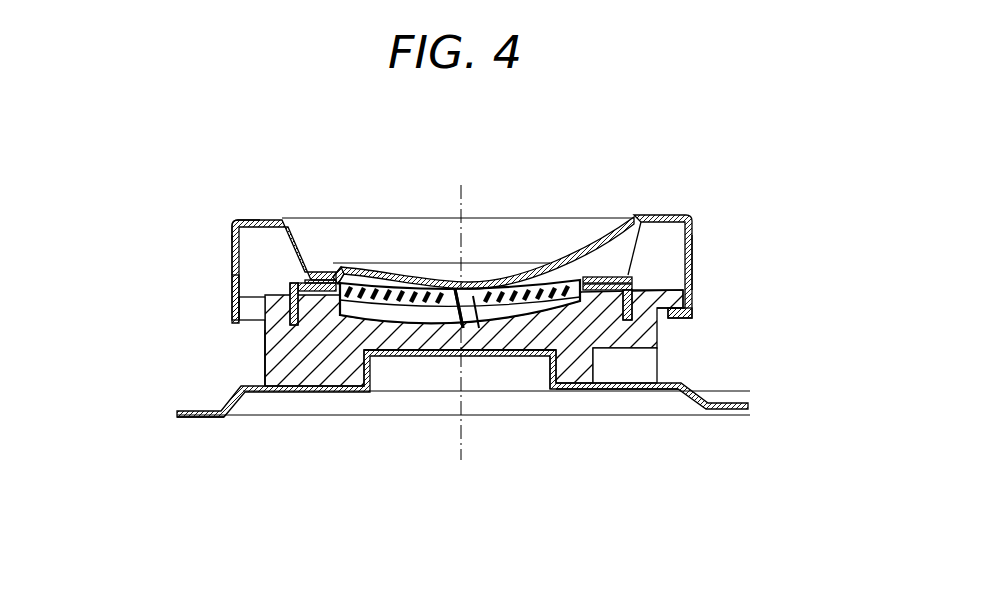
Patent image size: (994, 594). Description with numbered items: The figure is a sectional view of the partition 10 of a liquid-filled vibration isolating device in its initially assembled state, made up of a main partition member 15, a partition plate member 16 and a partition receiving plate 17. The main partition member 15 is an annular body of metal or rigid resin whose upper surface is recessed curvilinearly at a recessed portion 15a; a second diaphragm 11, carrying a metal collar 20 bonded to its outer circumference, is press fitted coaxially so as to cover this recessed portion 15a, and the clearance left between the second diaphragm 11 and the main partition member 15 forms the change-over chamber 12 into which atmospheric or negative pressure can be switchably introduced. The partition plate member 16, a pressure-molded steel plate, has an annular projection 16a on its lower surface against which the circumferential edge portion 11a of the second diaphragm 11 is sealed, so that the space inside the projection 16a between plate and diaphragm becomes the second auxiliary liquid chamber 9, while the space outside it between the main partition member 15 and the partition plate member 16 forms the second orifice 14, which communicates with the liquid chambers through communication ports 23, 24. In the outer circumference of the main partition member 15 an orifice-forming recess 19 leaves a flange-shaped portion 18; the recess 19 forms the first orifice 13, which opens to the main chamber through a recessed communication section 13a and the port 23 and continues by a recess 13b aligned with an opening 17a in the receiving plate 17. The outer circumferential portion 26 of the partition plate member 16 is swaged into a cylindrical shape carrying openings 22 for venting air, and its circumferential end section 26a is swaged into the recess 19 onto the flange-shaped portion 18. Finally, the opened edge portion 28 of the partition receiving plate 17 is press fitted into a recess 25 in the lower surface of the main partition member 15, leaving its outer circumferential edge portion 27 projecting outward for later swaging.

The partition 10 is at (817, 130).
The second auxiliary liquid chamber 9 is at (404, 287).
The second diaphragm 11 is at (530, 275).
The circumferential edge portion of the second diaphragm 11a is at (332, 275).
The change-over chamber 12 is at (497, 330).
The first orifice 13 is at (267, 347).
The recessed communication section 13a is at (253, 307).
The recess 13b is at (622, 370).
The second orifice 14 is at (223, 220).
The main partition member 15 is at (330, 356).
The recessed portion 15a is at (497, 330).
The partition plate member 16 is at (661, 210).
The annular projection 16a is at (322, 278).
The partition receiving plate 17 is at (724, 422).
The opening 17a is at (622, 392).
The flange-shaped portion 18 is at (668, 294).
The orifice-forming recess 19 is at (267, 347).
The metal collar 20 is at (259, 267).
The openings 22 is at (233, 255).
The communication port 23 is at (300, 275).
The communication port 24 is at (587, 282).
The recess 25 is at (410, 356).
The outer circumferential portion 26 is at (233, 282).
The circumferential end section 26a is at (678, 320).
The outer circumferential edge portion 27 is at (200, 420).
The opened edge portion 28 is at (540, 368).